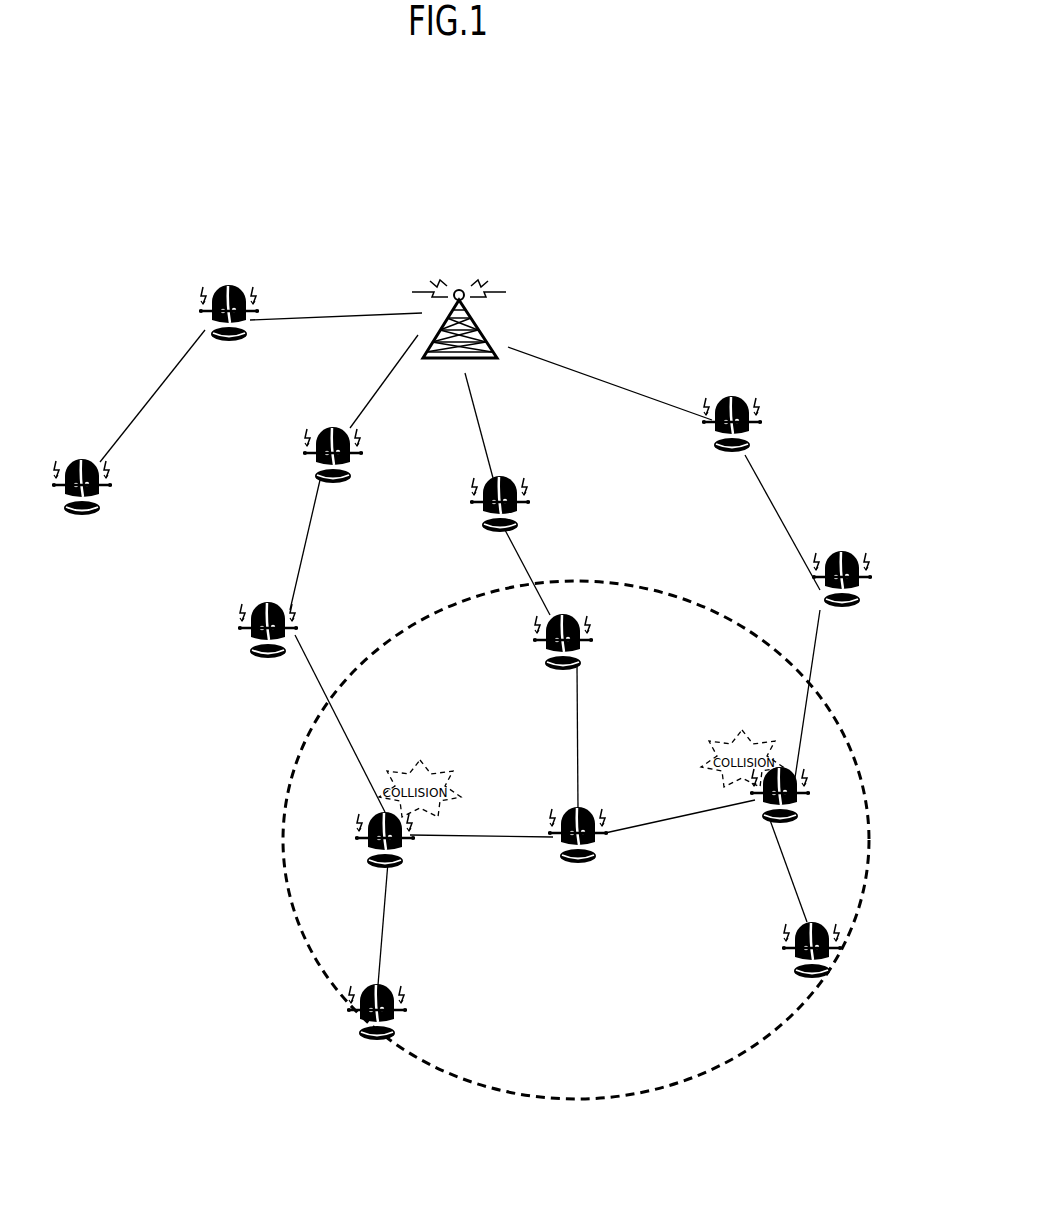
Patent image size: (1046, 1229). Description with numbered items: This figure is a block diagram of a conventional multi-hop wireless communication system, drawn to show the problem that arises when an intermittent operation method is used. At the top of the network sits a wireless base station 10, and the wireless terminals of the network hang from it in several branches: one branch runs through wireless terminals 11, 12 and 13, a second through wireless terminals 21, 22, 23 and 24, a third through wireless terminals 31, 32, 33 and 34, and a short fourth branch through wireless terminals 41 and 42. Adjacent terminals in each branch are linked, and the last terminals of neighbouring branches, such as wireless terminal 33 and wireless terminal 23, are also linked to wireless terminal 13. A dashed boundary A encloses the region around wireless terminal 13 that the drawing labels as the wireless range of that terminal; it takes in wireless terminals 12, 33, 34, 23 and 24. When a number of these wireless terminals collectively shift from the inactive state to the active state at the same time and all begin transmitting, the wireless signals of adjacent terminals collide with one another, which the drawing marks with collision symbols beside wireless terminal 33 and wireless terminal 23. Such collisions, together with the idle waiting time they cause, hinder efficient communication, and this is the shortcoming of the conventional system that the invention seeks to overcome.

The wireless base station 10 is at (482, 322).
The wireless terminal 11 is at (497, 533).
The wireless terminal 12 is at (559, 671).
The wireless terminal 13 is at (580, 864).
The wireless terminal 21 is at (734, 453).
The wireless terminal 22 is at (844, 608).
The wireless terminal 23 is at (792, 824).
The wireless terminal 24 is at (824, 979).
The wireless terminal 31 is at (335, 484).
The wireless terminal 32 is at (270, 659).
The wireless terminal 33 is at (395, 869).
The wireless terminal 34 is at (379, 1041).
The wireless terminal 41 is at (231, 342).
The wireless terminal 42 is at (84, 516).
The wireless range of wireless terminal 13 A is at (613, 840).